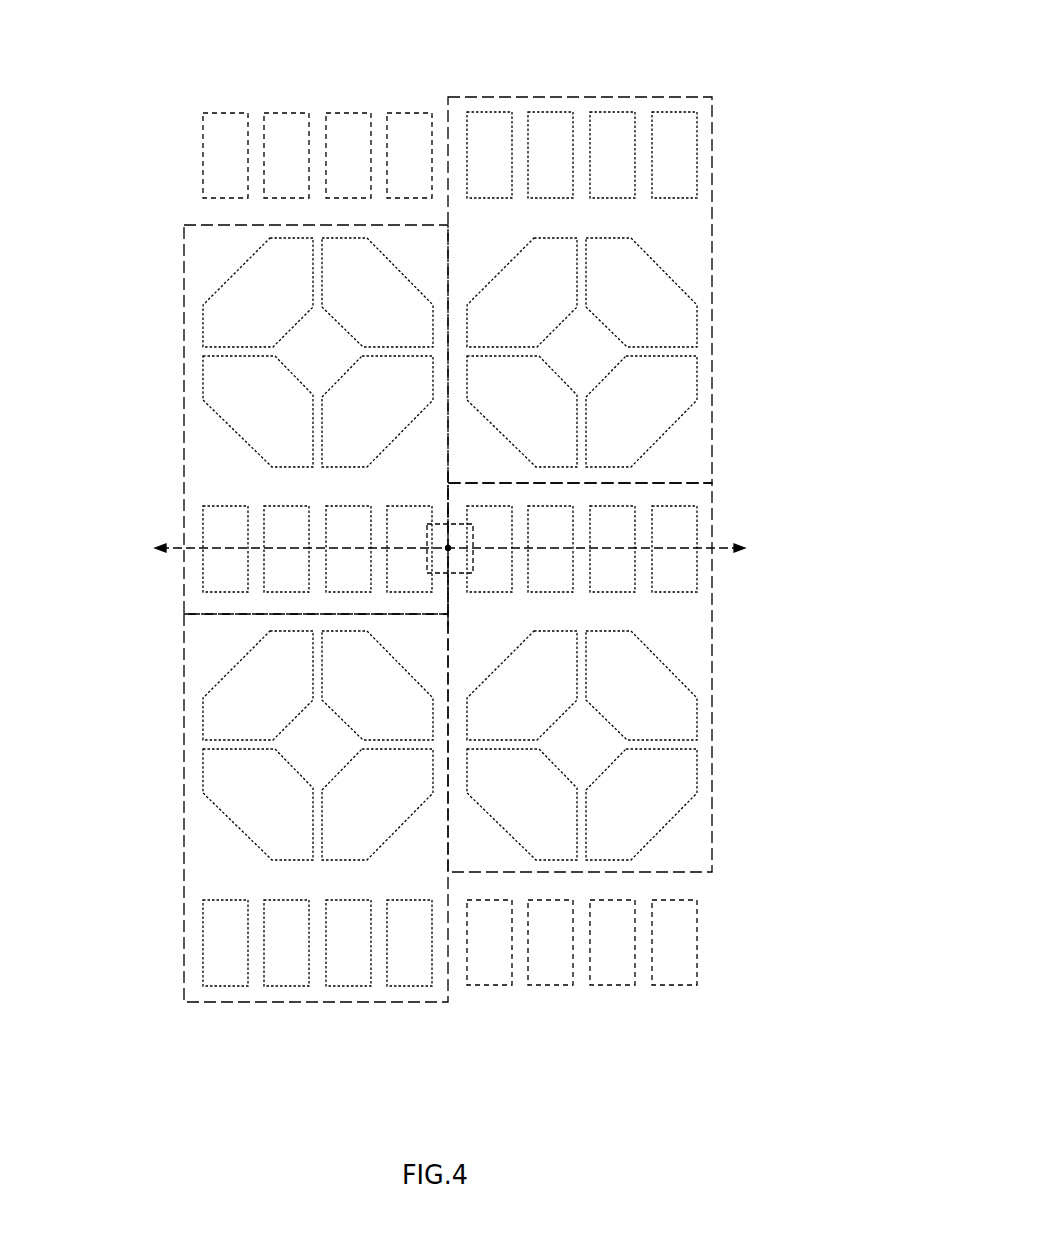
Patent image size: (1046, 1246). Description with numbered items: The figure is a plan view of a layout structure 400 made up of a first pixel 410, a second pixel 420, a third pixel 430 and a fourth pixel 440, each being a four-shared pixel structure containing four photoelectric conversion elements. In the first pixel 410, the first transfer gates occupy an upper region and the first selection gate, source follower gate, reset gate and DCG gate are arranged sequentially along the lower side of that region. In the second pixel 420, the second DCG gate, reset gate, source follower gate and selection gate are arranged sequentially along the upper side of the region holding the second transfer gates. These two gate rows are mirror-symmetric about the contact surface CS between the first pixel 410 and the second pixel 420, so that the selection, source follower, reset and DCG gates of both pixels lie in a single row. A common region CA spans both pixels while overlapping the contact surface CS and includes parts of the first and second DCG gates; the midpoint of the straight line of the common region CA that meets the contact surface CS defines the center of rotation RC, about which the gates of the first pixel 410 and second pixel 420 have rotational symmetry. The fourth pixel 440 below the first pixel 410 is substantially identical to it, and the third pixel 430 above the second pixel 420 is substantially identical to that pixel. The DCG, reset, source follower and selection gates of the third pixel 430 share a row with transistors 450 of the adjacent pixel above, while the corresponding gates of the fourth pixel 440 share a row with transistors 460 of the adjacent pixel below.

The layout structure 400 is at (712, 24).
The first pixel 410 is at (184, 427).
The second pixel 420 is at (712, 655).
The third pixel 430 is at (712, 263).
The fourth pixel 440 is at (184, 820).
The transistors of an adjacent pixel 450 is at (225, 113).
The transistors of an adjacent pixel 460 is at (490, 985).
The common region CA is at (458, 524).
The center of rotation RC is at (448, 545).
The contact surface CS is at (448, 604).